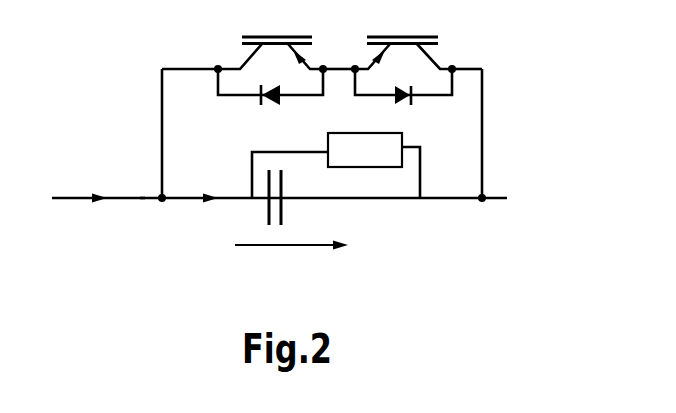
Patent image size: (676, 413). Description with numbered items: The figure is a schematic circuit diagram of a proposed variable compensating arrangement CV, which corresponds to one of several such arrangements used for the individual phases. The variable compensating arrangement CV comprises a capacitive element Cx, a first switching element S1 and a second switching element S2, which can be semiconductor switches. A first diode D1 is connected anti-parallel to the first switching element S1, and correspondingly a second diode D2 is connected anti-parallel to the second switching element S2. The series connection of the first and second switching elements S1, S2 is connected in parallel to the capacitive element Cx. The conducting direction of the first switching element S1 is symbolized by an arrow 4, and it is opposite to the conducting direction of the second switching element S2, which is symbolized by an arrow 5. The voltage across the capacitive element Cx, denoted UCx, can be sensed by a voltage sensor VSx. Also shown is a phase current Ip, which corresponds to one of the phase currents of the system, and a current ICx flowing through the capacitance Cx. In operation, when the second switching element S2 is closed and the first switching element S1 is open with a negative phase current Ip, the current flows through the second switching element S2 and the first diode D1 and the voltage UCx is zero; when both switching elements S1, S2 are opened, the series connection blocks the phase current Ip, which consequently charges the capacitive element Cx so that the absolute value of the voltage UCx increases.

The arrow 4 is at (279, 36).
The arrow 5 is at (398, 41).
The first switching element S1 is at (340, 22).
The second switching element S2 is at (357, 48).
The first diode D1 is at (270, 98).
The second diode D2 is at (403, 98).
The capacitive element Cx is at (291, 192).
The voltage sensor VSx is at (336, 165).
The variable compensating arrangement CV is at (128, 221).
The phase current Ip is at (99, 180).
The current through the capacitive element ICx is at (217, 180).
The voltage across the capacitive element UCx is at (291, 265).